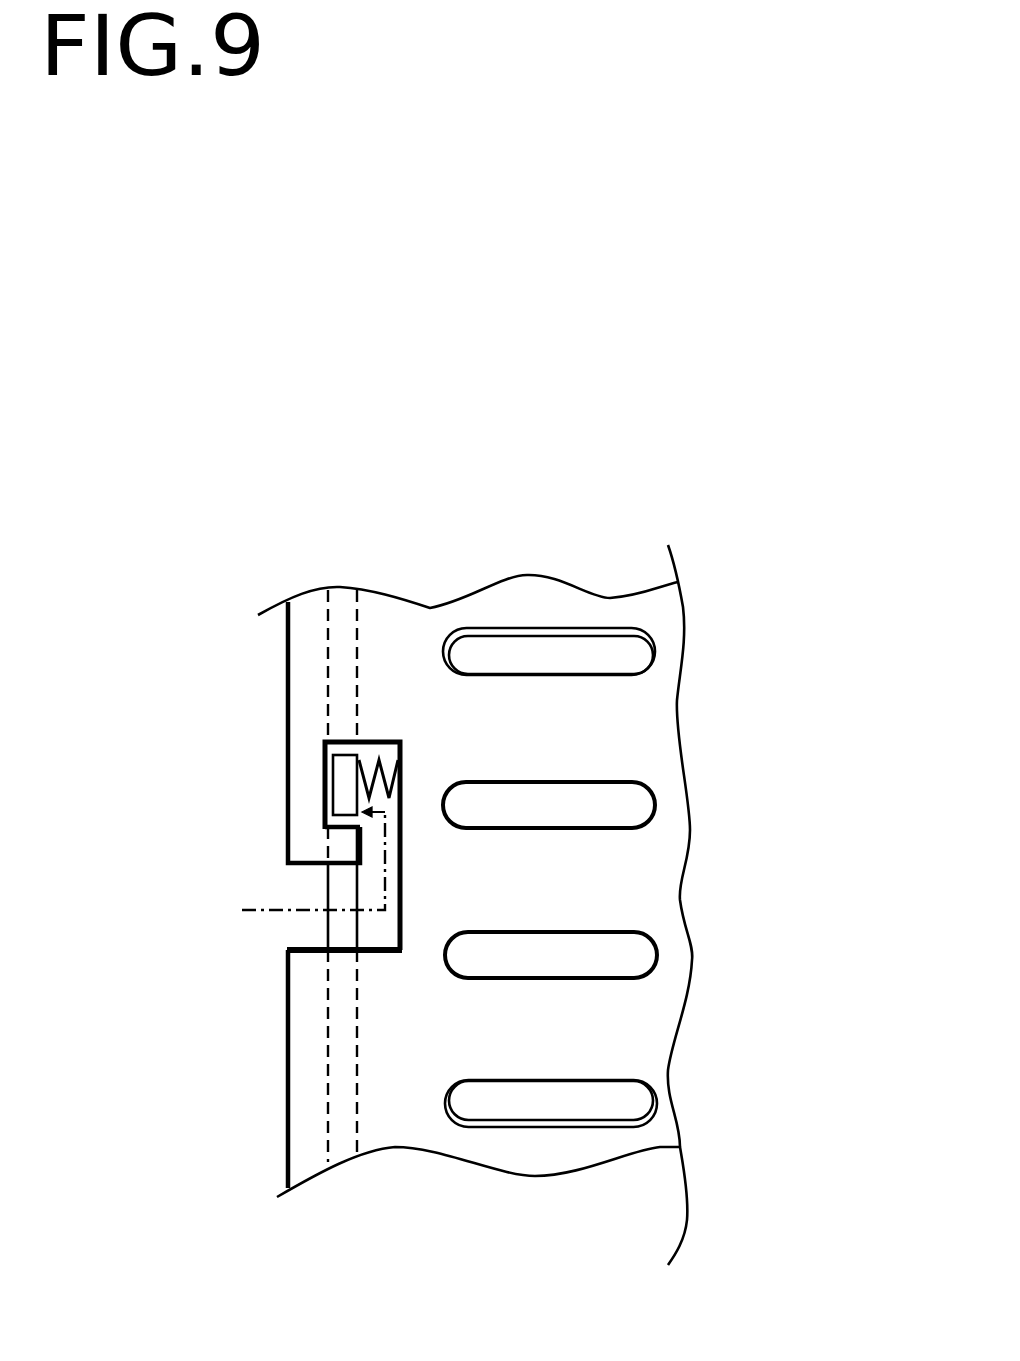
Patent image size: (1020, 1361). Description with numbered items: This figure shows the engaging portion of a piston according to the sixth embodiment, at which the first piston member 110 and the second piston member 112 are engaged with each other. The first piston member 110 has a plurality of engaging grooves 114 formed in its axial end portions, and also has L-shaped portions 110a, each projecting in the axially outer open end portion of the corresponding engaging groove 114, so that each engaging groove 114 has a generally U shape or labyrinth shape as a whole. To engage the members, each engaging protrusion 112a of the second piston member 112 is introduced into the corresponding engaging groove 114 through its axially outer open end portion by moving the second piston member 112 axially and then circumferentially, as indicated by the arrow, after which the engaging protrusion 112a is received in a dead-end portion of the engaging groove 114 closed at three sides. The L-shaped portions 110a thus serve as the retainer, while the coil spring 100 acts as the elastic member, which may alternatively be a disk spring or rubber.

The first piston member 110 is at (652, 452).
The L-shaped portion 110a is at (305, 802).
The second piston member 112 is at (309, 893).
The engaging protrusion 112a is at (346, 758).
The engaging groove 114 is at (310, 945).
The coil spring 100 is at (383, 744).